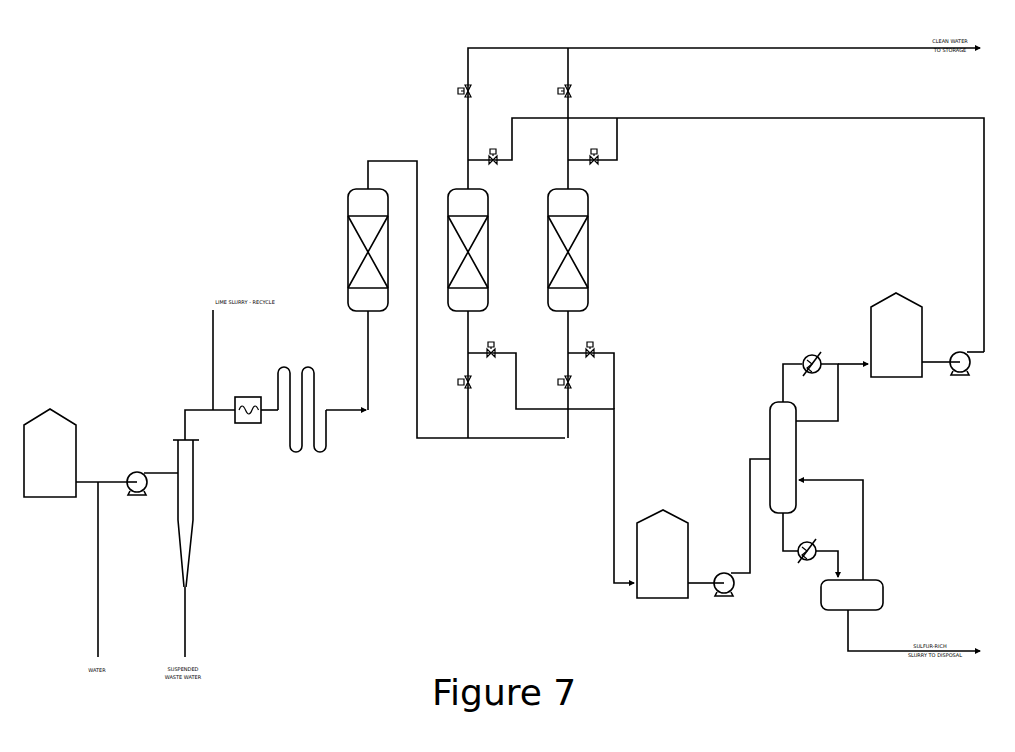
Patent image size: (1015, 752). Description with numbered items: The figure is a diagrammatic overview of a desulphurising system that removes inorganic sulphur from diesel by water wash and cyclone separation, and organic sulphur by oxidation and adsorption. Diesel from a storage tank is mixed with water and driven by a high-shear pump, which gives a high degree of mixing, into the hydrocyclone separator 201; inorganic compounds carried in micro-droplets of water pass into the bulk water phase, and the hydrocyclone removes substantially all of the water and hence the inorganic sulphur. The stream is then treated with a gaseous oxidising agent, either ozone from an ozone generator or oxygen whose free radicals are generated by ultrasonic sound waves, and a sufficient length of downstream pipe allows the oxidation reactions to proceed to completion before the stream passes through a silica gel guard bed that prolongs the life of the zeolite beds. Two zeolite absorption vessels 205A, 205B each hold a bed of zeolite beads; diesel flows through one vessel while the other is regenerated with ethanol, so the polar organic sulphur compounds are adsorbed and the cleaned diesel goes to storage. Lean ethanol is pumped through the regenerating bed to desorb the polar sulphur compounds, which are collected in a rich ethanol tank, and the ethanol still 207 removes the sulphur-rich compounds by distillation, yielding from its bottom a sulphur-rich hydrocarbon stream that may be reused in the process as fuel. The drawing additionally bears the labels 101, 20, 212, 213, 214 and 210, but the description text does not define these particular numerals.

The feed tank 101 is at (50, 462).
The hydrocyclone separator 20 is at (194, 548).
The sparging unit 212 is at (248, 428).
The heating coil 213 is at (302, 423).
The hydrocyclone separator 201 is at (377, 250).
The zeolite absorption vessel 205A is at (481, 250).
The zeolite absorption vessel 205B is at (580, 250).
The regenerant tank 214 is at (662, 562).
The ethanol still 207 is at (793, 457).
The recycle tank 210 is at (896, 344).